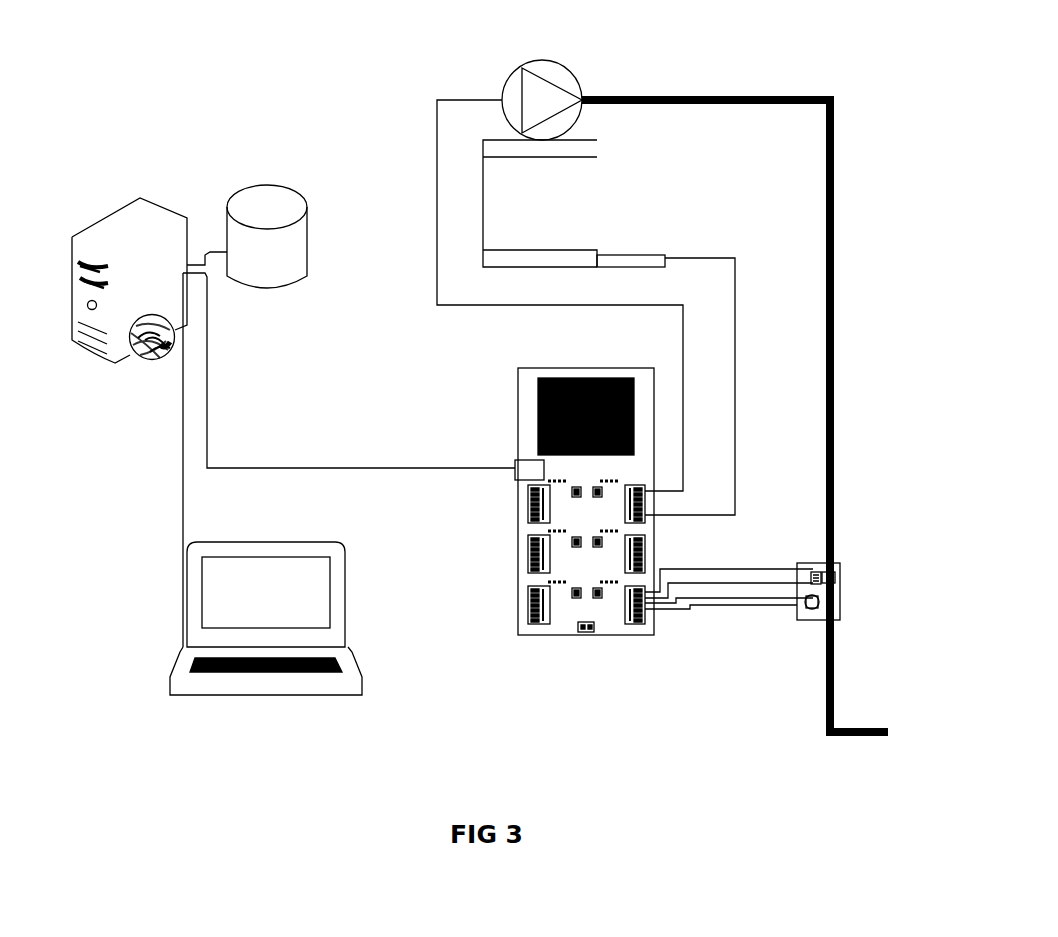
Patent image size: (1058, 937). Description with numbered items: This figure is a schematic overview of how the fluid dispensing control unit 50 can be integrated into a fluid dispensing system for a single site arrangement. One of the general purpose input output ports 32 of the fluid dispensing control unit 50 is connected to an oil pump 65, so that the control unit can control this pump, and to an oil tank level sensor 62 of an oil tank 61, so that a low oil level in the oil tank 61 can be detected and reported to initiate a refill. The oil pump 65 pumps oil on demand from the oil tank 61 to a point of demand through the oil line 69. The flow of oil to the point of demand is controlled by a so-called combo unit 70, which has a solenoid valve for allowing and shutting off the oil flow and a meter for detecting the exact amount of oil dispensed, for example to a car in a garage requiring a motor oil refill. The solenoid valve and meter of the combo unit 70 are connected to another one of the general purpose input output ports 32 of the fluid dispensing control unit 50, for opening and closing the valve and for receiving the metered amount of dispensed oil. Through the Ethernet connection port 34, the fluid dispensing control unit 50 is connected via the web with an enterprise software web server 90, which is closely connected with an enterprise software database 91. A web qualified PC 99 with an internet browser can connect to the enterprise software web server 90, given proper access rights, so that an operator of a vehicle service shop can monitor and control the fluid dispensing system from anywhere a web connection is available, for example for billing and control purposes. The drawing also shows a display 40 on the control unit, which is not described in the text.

The general purpose input output ports 32 is at (528, 610).
The Ethernet connection port 34 is at (528, 472).
The display screen 40 is at (597, 377).
The fluid dispensing control unit 50 is at (540, 520).
The oil tank 61 is at (483, 190).
The oil tank level sensor 62 is at (622, 255).
The oil pump 65 is at (565, 75).
The oil line 69 is at (834, 213).
The combo unit 70 is at (841, 592).
The enterprise software web server 90 is at (138, 212).
The enterprise software database 91 is at (265, 212).
The web qualified PC 99 is at (237, 688).